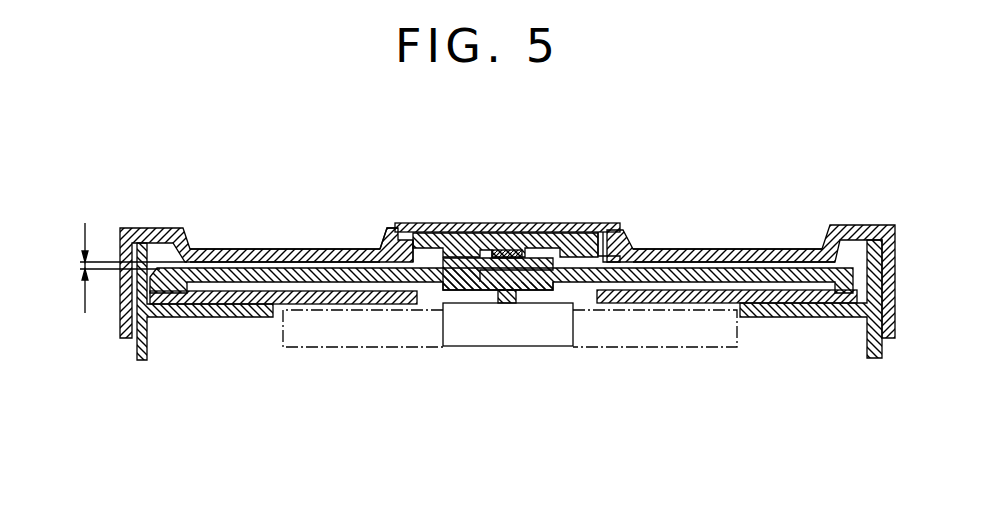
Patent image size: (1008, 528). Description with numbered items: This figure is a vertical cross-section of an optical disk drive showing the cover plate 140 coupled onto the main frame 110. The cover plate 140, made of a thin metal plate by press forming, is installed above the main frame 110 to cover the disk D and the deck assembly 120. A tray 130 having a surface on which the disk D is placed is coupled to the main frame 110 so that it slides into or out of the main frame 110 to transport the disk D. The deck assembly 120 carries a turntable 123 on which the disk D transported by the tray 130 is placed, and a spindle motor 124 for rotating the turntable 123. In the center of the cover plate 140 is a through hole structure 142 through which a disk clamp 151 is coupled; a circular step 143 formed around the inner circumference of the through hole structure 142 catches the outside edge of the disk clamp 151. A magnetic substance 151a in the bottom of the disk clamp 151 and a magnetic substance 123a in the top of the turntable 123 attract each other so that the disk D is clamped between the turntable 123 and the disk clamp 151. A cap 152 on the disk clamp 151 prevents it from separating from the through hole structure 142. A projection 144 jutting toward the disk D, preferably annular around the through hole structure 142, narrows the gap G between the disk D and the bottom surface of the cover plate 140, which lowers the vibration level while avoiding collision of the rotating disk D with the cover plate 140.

The main frame 110 is at (192, 318).
The deck assembly 120 is at (652, 349).
The turntable 123 is at (478, 290).
The magnetic substance 123a is at (508, 300).
The spindle motor 124 is at (553, 335).
The tray 130 is at (249, 305).
The cover plate 140 is at (122, 316).
The through hole structure 142 is at (400, 228).
The circular step 143 is at (430, 225).
The projection 144 is at (283, 249).
The disk clamp 151 is at (489, 258).
The magnetic substance 151a is at (508, 249).
The cap 152 is at (580, 223).
The disk D is at (696, 252).
The gap G is at (122, 268).